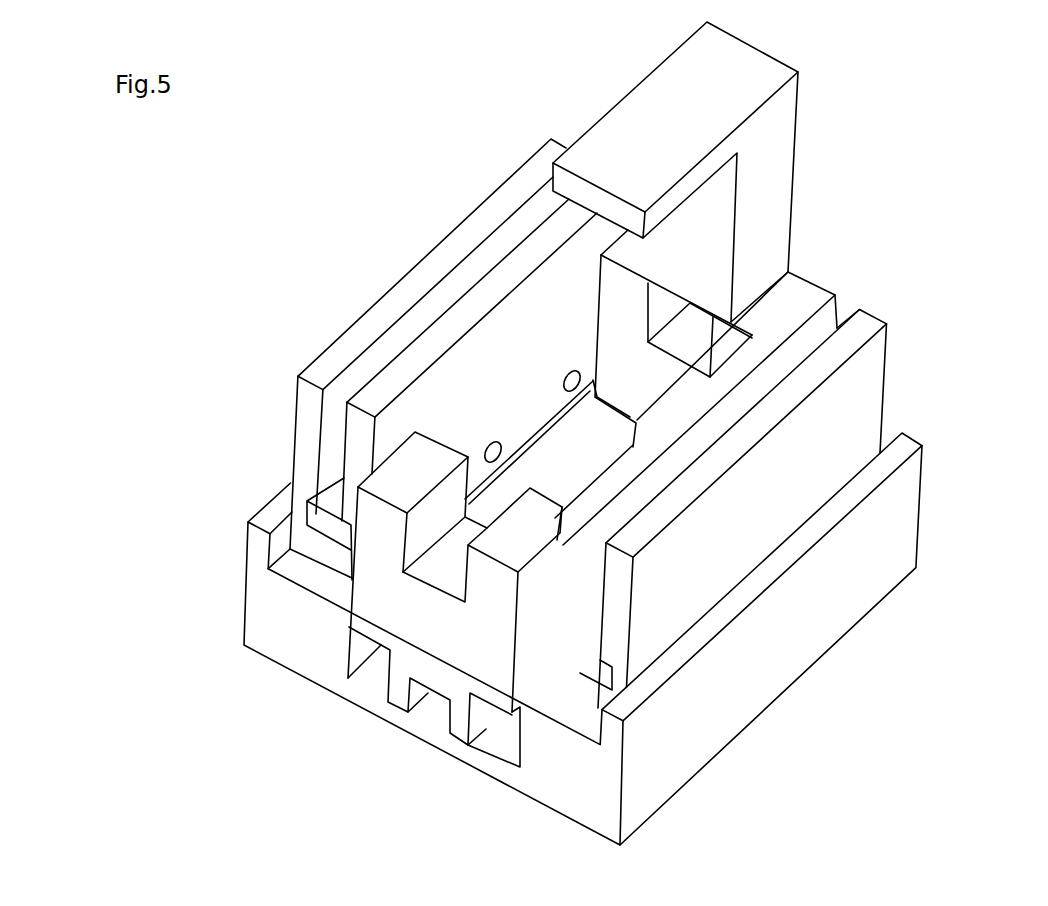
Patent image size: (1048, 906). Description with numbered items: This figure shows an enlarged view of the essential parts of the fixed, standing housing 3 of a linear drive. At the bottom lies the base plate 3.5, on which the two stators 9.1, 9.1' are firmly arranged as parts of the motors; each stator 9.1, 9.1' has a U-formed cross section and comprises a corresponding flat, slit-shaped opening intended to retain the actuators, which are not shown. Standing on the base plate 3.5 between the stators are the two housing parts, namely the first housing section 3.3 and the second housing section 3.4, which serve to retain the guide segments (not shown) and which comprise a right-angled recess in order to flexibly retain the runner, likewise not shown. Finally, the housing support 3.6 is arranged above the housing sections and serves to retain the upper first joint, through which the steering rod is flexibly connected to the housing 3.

The housing 3 is at (978, 236).
The first housing section 3.3 is at (436, 634).
The second housing section 3.4 is at (647, 382).
The base plate 3.5 is at (578, 783).
The housing support 3.6 is at (697, 132).
The stator 9.1 is at (443, 359).
The stator 9.1' is at (725, 490).